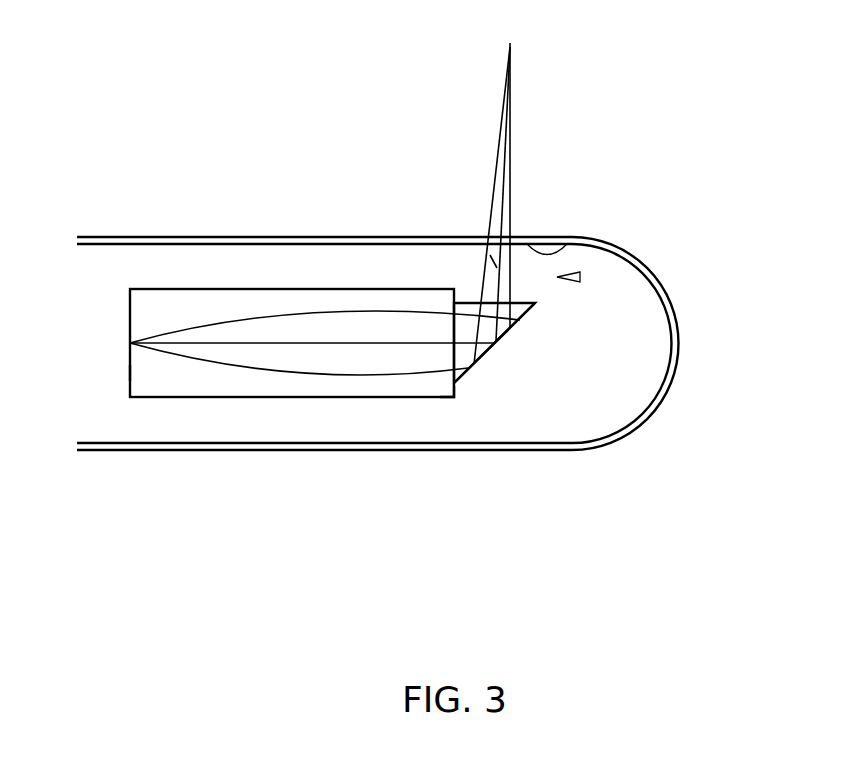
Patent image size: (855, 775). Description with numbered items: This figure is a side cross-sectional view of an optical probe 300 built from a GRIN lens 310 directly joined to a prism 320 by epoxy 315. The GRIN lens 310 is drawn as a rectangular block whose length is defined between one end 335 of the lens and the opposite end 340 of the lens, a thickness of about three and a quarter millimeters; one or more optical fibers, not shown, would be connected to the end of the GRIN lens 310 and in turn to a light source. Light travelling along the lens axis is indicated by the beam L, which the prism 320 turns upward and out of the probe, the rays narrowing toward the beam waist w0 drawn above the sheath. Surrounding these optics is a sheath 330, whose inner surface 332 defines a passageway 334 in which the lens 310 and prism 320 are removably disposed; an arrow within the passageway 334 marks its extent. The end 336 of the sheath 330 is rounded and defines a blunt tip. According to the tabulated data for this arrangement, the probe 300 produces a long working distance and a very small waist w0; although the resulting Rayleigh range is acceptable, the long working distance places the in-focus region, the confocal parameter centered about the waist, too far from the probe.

The optical probe 300 is at (340, 410).
The GRIN lens 310 is at (202, 383).
The epoxy 315 is at (455, 383).
The prism 320 is at (517, 323).
The sheath 330 is at (616, 252).
The inner surface 332 is at (568, 244).
The passageway 334 is at (580, 277).
The end of lens 335 is at (130, 372).
The end of sheath 336 is at (661, 404).
The opposite end of lens 340 is at (455, 397).
The beam waist w0 is at (517, 199).
The light beam L is at (497, 268).